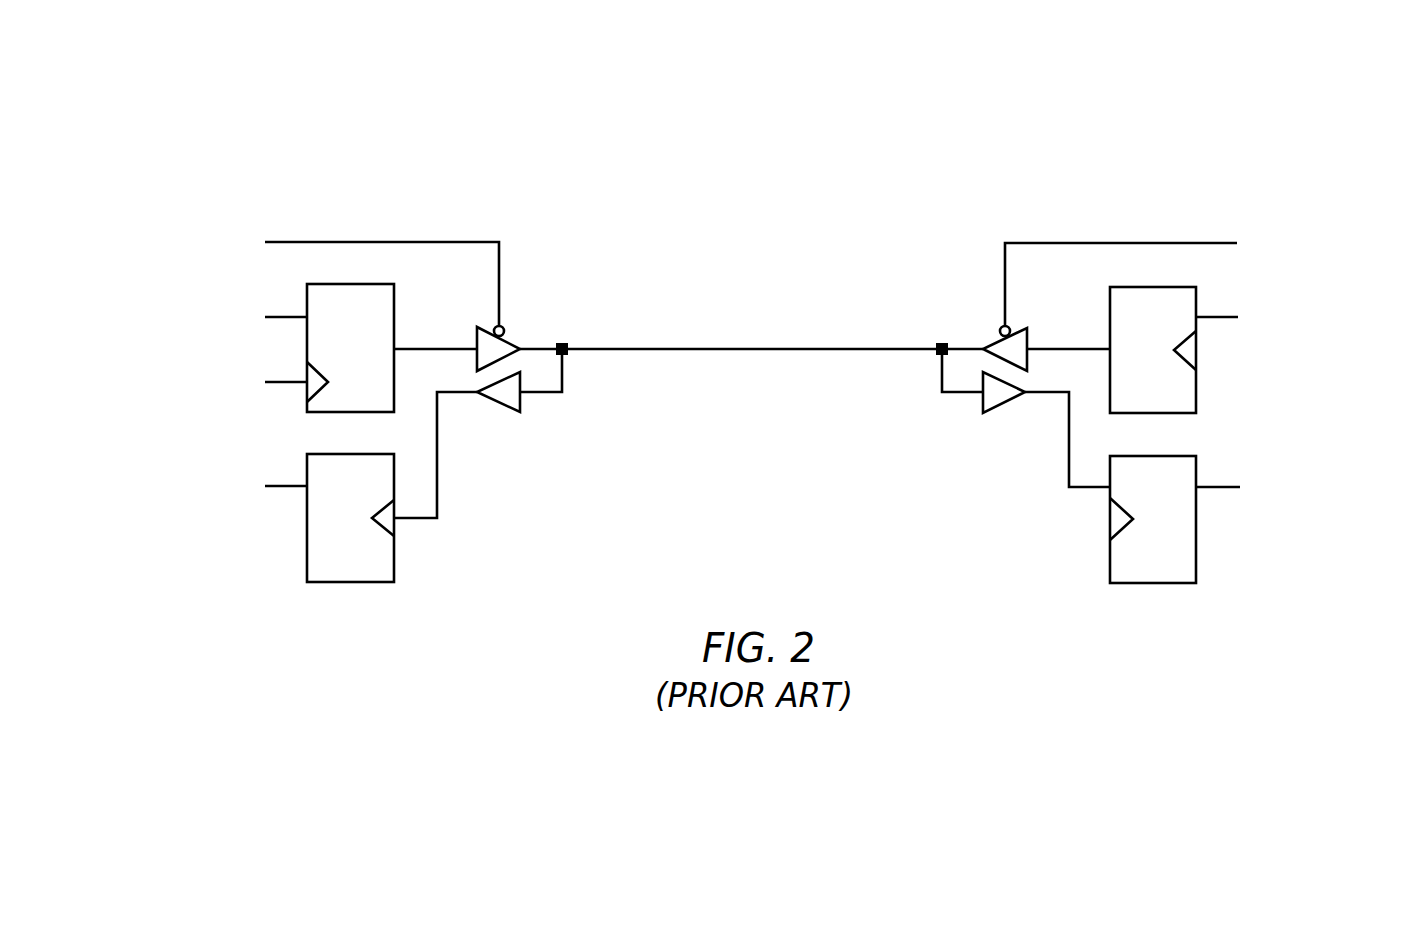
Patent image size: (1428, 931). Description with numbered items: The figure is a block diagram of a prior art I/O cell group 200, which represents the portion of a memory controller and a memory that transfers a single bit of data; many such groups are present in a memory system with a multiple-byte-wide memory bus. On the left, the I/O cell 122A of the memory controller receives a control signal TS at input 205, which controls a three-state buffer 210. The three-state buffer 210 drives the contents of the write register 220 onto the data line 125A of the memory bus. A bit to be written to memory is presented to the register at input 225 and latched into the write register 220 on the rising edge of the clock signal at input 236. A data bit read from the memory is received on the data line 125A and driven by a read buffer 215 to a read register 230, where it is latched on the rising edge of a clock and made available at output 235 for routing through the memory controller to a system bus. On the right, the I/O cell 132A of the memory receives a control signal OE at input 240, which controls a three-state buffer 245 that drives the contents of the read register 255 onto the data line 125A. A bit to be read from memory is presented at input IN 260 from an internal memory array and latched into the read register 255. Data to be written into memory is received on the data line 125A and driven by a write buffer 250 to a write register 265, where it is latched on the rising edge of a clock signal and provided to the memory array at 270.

The I/O cell group 200 is at (972, 132).
The I/O cell of the memory controller 122A is at (345, 193).
The I/O cell of the memory 132A is at (1139, 215).
The data line 125A is at (737, 335).
The control signal TS input 205 is at (195, 236).
The write data input 225 is at (195, 314).
The clock signal input 236 is at (185, 378).
The read data output 235 is at (195, 483).
The write register 220 is at (394, 296).
The three-state buffer 210 is at (512, 337).
The read buffer 215 is at (500, 402).
The read register 230 is at (393, 550).
The control signal OE input 240 is at (1305, 234).
The input IN 260 is at (1305, 309).
The output to memory array 270 is at (1303, 476).
The three-state buffer 245 is at (995, 338).
The read register 255 is at (1196, 382).
The write buffer 250 is at (1015, 402).
The write register 265 is at (1196, 552).